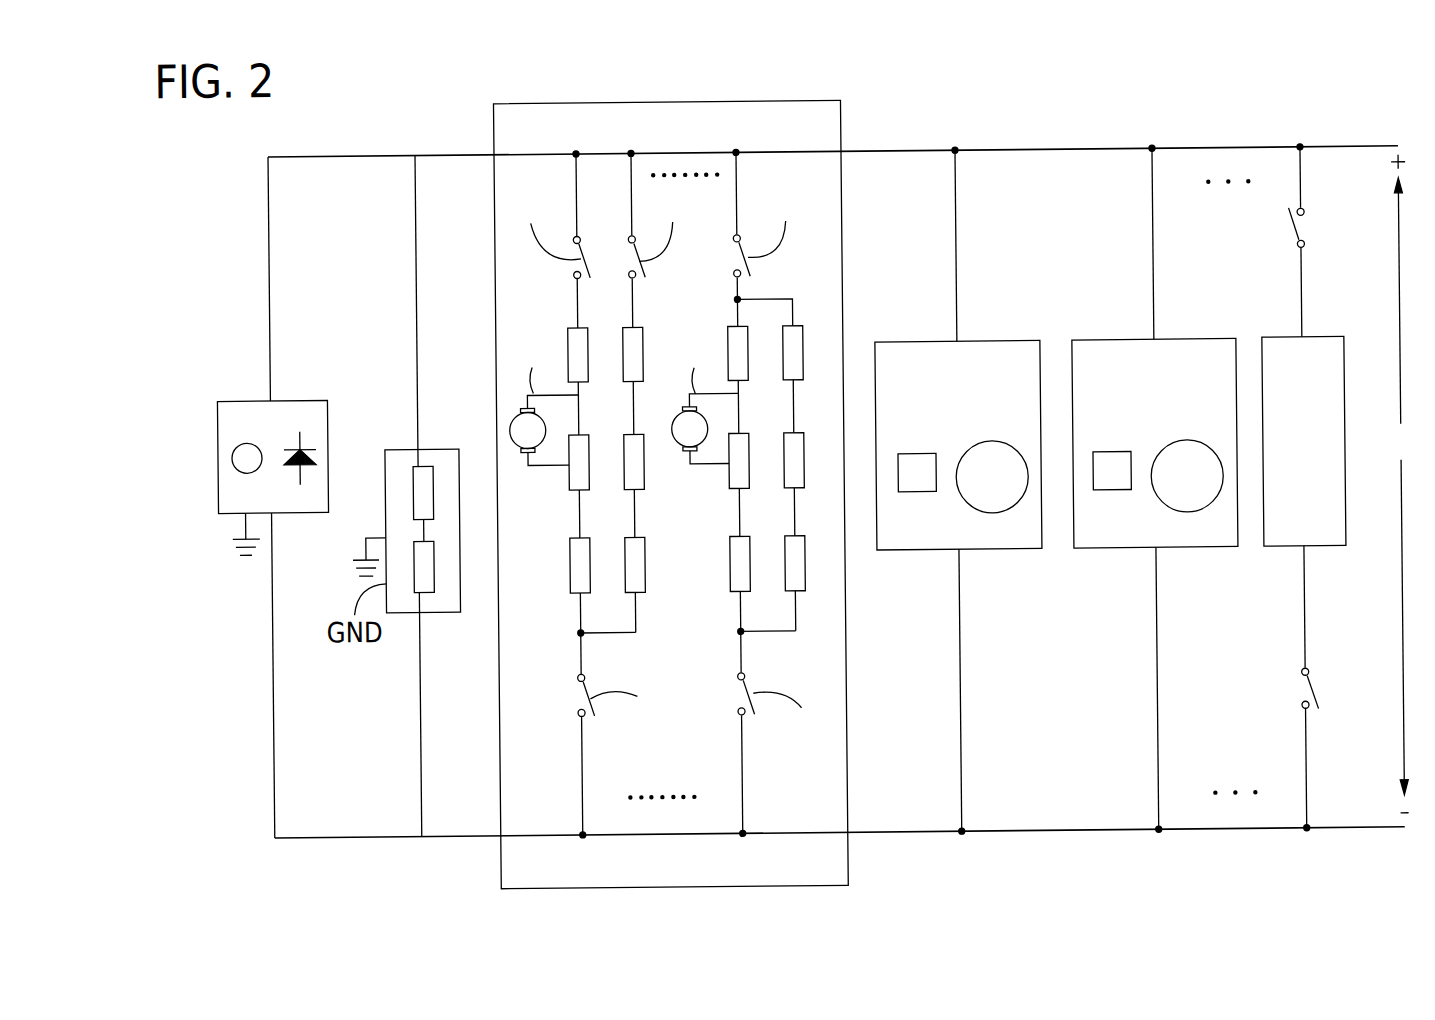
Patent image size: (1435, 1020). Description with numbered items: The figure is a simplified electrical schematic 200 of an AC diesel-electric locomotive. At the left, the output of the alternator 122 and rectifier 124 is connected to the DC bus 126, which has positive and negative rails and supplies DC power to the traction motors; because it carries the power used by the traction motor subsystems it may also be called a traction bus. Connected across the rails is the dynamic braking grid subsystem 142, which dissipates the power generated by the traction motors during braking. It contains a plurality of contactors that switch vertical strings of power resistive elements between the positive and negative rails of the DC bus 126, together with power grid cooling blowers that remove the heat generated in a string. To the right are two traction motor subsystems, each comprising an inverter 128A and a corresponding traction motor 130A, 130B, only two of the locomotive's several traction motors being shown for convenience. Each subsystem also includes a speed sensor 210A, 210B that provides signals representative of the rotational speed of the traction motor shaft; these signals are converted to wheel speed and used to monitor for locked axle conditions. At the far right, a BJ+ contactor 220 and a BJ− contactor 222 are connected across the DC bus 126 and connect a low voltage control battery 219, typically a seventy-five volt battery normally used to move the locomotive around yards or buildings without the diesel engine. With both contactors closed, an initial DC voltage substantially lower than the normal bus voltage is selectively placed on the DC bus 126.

The electrical schematic 200 is at (1172, 126).
The rectifier 124 is at (214, 430).
The alternator 122 is at (214, 460).
The dynamic braking grid subsystem 142 is at (652, 103).
The inverter 128A is at (985, 490).
The speed sensor 210A is at (912, 495).
The traction motor 130A is at (992, 517).
The speed sensor 210B is at (1107, 495).
The traction motor 130B is at (1187, 518).
The low voltage control battery 219 is at (1313, 344).
The BJ+ contactor 220 is at (1292, 235).
The BJ− contactor 222 is at (1307, 696).
The DC bus 126 is at (1404, 484).